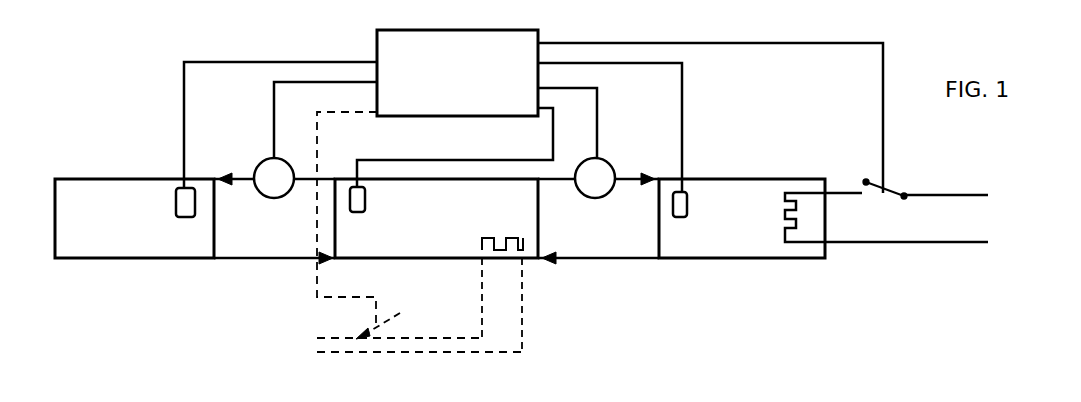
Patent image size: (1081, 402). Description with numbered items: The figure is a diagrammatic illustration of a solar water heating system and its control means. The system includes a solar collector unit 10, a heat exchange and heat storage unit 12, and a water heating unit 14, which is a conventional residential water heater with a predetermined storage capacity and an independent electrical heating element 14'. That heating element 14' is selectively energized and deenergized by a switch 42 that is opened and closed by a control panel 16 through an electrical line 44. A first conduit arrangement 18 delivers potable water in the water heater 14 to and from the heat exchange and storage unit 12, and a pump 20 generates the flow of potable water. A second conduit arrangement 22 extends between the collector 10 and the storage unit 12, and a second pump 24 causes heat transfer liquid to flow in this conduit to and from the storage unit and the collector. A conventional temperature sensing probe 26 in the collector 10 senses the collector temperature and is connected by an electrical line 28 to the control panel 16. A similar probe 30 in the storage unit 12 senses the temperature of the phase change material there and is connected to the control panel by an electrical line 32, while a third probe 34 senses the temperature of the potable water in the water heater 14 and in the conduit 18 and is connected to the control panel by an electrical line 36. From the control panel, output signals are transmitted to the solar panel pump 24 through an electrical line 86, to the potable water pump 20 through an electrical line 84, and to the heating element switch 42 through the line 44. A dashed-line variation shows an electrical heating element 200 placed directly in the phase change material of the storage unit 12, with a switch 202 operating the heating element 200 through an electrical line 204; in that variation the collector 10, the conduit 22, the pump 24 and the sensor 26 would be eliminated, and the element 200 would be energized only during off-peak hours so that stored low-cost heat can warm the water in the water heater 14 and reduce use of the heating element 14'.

The solar collector unit 10 is at (97, 262).
The heat exchange and heat storage unit 12 is at (380, 262).
The water heating unit 14 is at (742, 236).
The electrical heating element 14' is at (886, 243).
The control panel 16 is at (377, 46).
The first conduit arrangement 18 is at (563, 190).
The pump 20 is at (606, 190).
The second conduit arrangement 22 is at (262, 190).
The second pump 24 is at (286, 190).
The temperature sensing probe 26 is at (176, 200).
The electrical line 28 is at (184, 123).
The probe 30 is at (350, 200).
The electrical line 32 is at (357, 168).
The third probe 34 is at (680, 217).
The electrical line 36 is at (682, 165).
The switch 42 is at (902, 190).
The electrical line 44 is at (883, 110).
The electrical line 84 is at (597, 106).
The electrical line 86 is at (274, 124).
The electrical heating element 200 is at (520, 250).
The switch 202 is at (396, 318).
The electrical line 204 is at (322, 128).